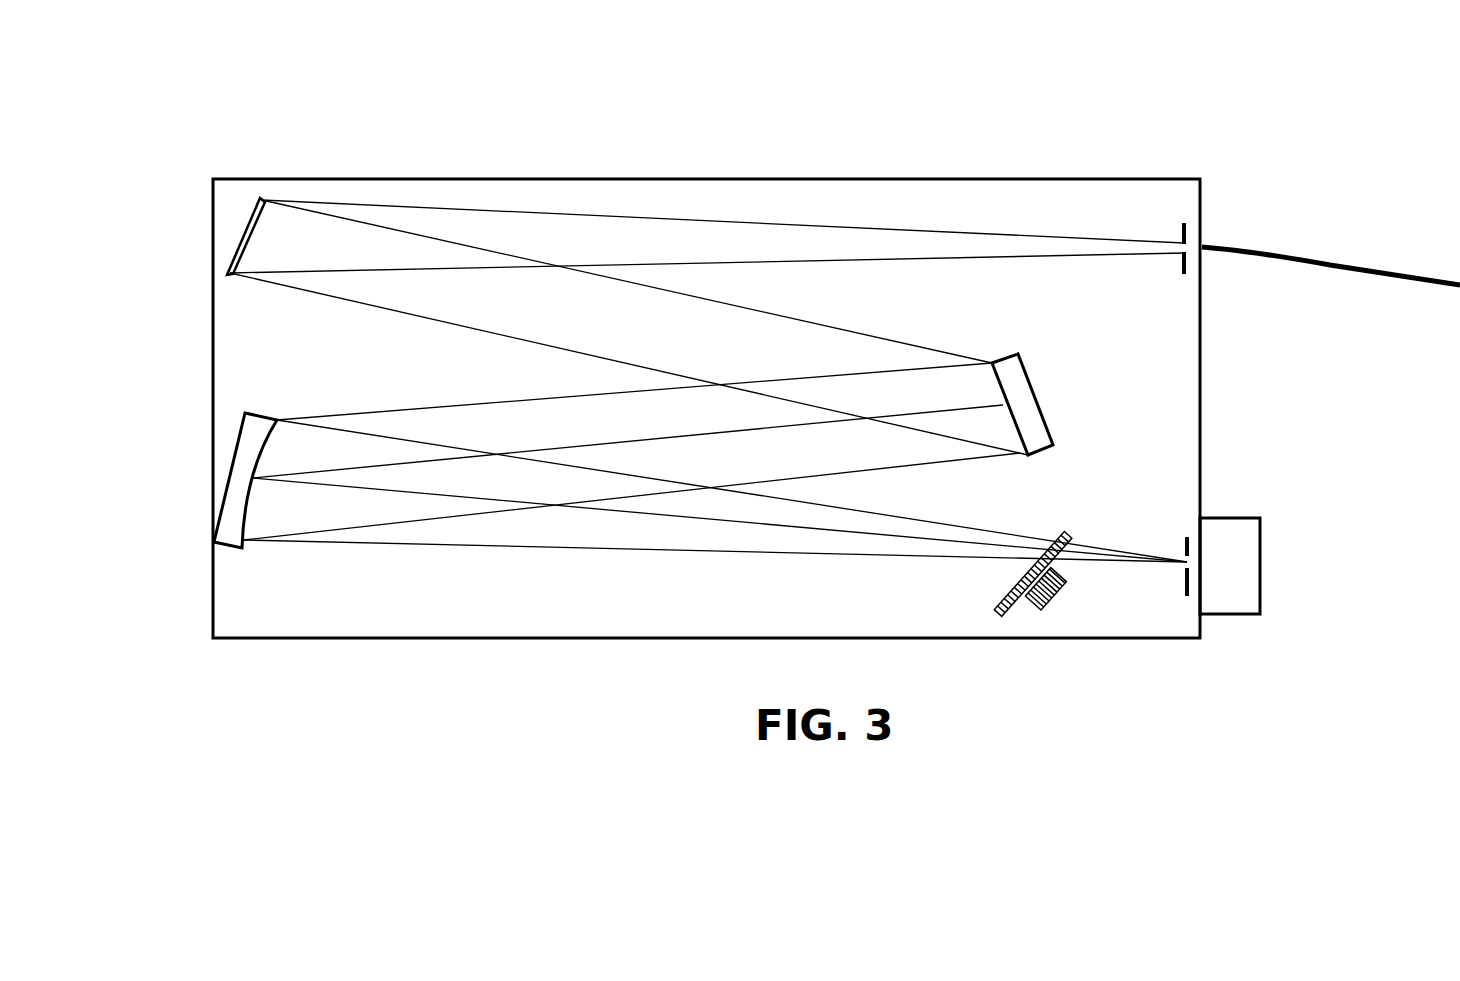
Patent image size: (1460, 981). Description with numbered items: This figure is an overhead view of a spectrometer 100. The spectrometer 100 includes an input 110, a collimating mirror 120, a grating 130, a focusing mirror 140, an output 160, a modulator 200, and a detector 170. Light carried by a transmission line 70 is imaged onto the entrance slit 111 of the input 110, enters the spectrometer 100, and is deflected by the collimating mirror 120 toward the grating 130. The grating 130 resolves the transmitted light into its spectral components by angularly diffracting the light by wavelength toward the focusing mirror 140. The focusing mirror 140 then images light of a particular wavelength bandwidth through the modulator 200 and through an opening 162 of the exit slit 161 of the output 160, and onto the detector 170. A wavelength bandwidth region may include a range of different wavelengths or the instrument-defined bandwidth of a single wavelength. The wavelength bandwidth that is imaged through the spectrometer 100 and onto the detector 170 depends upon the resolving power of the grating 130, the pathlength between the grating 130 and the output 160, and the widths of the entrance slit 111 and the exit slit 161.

The spectrometer 100 is at (968, 138).
The input 110 is at (1203, 243).
The entrance slit 111 is at (1183, 222).
The transmission line 70 is at (1377, 268).
The collimating mirror 120 is at (263, 198).
The grating 130 is at (1035, 430).
The focusing mirror 140 is at (215, 540).
The detector 170 is at (1245, 550).
The output 160 is at (1197, 578).
The exit slit 161 is at (1188, 580).
The opening 162 is at (1192, 572).
The modulator 200 is at (998, 613).